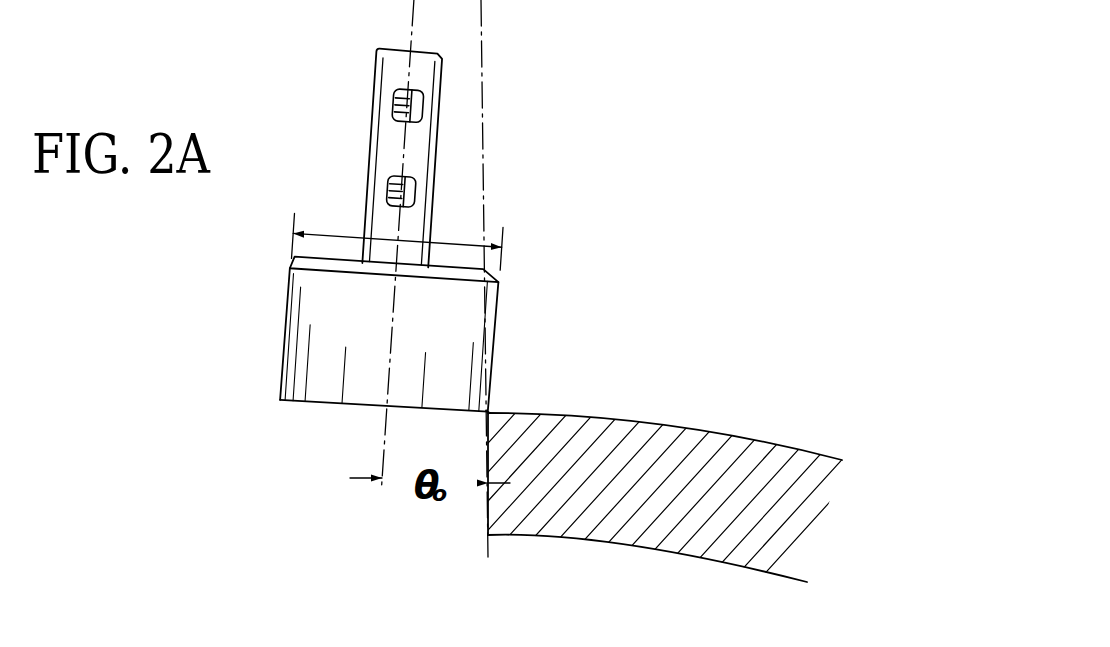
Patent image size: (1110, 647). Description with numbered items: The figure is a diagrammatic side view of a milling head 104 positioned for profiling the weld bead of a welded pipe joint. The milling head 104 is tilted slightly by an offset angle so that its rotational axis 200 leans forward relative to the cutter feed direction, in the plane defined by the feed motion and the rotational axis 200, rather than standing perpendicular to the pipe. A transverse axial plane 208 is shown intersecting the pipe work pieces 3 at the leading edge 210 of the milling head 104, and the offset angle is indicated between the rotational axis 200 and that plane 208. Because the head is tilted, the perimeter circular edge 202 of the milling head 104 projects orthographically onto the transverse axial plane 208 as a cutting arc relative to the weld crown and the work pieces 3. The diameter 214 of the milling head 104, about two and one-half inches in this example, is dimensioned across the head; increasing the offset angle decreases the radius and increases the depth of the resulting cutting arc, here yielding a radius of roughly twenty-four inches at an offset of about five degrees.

The rotational axis 200 is at (412, 33).
The transverse axial plane 208 is at (483, 157).
The diameter 214 is at (342, 232).
The milling head 104 is at (287, 320).
The perimeter circular edge 202 is at (280, 400).
The leading edge 210 is at (490, 412).
The work pieces 3 is at (610, 417).